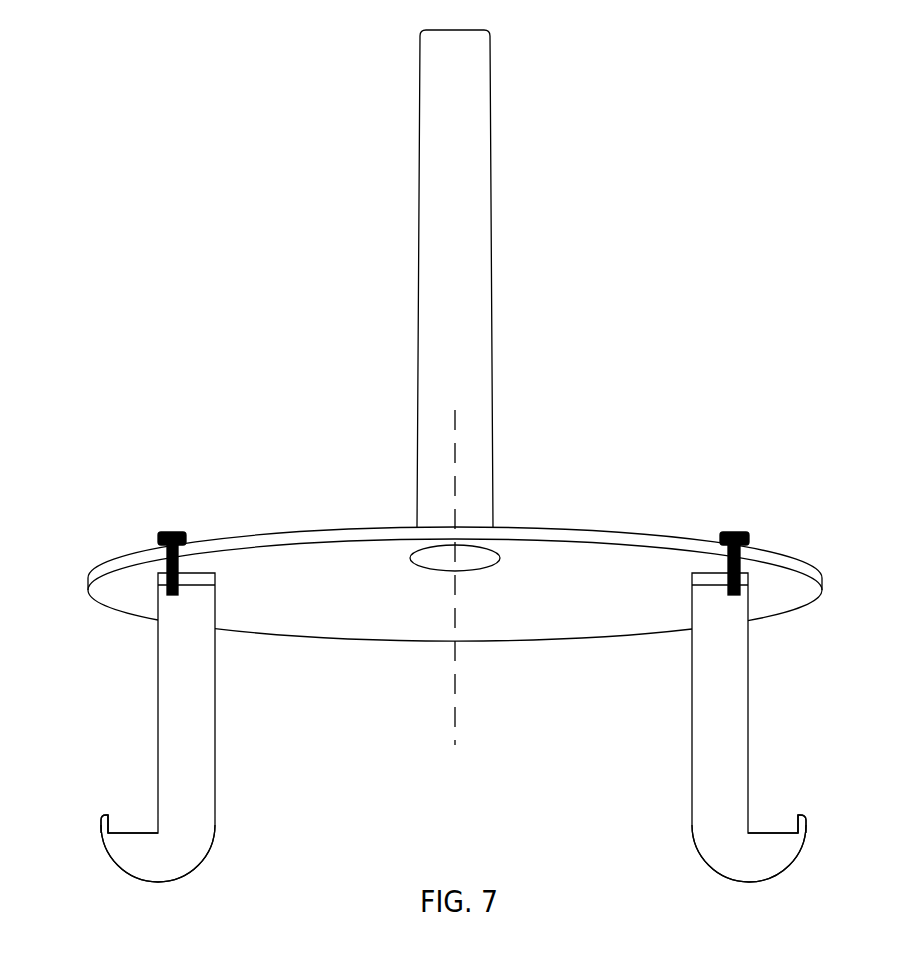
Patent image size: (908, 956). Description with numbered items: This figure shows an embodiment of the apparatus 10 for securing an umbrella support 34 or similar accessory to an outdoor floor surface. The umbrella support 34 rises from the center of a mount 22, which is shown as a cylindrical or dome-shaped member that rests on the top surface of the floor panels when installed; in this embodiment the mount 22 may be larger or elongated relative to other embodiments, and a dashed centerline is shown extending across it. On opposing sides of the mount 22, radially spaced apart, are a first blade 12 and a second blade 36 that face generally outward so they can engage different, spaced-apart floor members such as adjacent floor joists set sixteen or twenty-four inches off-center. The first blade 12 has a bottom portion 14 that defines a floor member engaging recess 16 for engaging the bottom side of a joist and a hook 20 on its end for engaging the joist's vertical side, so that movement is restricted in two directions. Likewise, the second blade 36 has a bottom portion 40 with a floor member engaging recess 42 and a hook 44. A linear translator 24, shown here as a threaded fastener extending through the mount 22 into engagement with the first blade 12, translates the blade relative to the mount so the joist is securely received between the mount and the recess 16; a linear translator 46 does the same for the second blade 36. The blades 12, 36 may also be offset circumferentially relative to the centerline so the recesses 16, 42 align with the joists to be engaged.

The apparatus 10 is at (297, 117).
The first blade 12 is at (760, 720).
The bottom portion 14 is at (717, 882).
The floor member engaging recess 16 is at (768, 828).
The hook 20 is at (820, 822).
The mount 22 is at (343, 529).
The linear translator 24 is at (737, 528).
The umbrella support 34 is at (420, 175).
The second blade 36 is at (148, 720).
The bottom portion 40 is at (197, 882).
The floor member engaging recess 42 is at (137, 828).
The hook 44 is at (86, 822).
The linear translator 46 is at (172, 528).